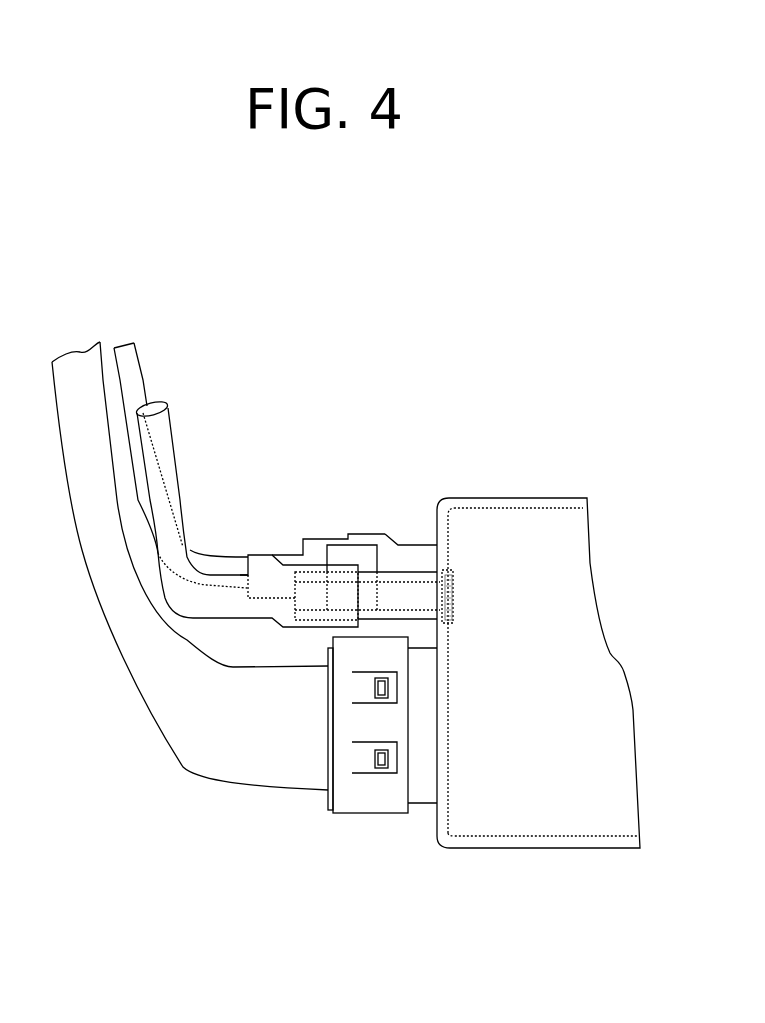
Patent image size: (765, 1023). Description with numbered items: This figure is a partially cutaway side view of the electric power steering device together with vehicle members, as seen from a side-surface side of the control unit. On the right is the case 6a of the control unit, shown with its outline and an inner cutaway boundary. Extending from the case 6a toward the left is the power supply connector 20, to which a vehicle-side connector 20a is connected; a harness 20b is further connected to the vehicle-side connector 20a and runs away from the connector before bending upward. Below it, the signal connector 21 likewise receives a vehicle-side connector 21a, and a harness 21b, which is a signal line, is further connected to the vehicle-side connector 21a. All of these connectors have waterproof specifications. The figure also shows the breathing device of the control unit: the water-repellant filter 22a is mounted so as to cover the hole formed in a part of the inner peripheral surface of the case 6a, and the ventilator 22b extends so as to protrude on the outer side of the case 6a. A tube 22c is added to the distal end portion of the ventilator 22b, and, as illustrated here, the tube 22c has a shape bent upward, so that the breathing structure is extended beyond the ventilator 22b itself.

The case 6a is at (542, 853).
The power supply connector 20 is at (410, 547).
The vehicle-side connector 20a is at (302, 532).
The harness 20b is at (133, 343).
The signal connector 21 is at (425, 812).
The vehicle-side connector 21a is at (342, 818).
The harness 21b is at (183, 767).
The water-repellant filter 22a is at (453, 580).
The ventilator 22b is at (383, 567).
The tube 22c is at (190, 552).